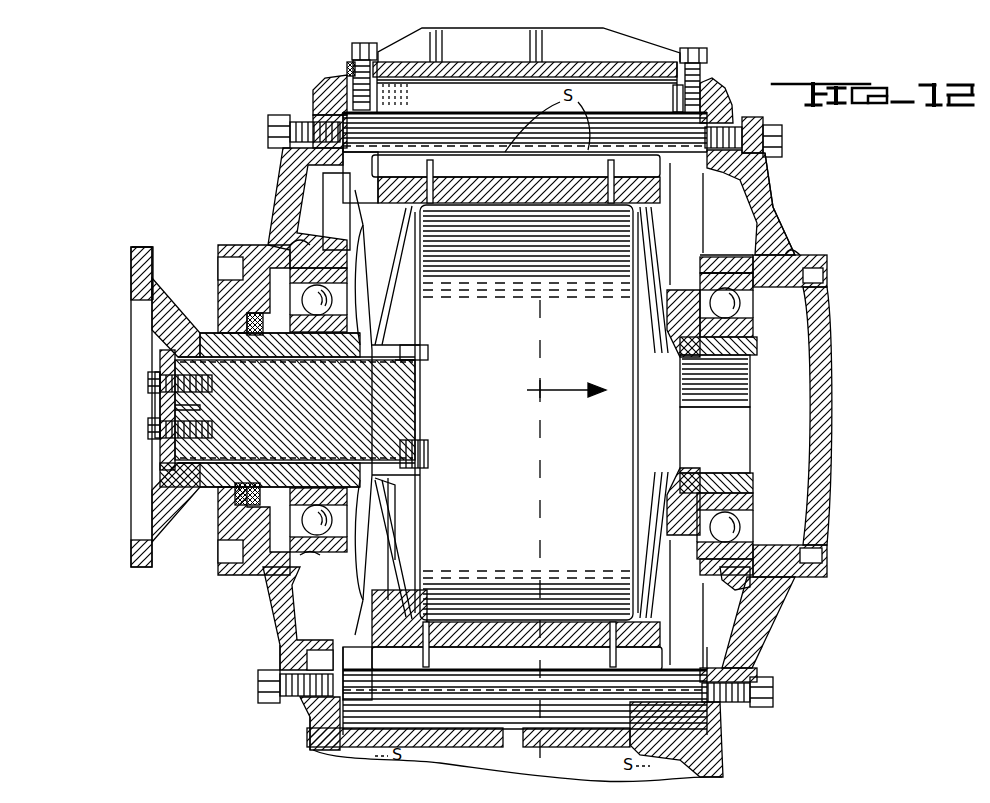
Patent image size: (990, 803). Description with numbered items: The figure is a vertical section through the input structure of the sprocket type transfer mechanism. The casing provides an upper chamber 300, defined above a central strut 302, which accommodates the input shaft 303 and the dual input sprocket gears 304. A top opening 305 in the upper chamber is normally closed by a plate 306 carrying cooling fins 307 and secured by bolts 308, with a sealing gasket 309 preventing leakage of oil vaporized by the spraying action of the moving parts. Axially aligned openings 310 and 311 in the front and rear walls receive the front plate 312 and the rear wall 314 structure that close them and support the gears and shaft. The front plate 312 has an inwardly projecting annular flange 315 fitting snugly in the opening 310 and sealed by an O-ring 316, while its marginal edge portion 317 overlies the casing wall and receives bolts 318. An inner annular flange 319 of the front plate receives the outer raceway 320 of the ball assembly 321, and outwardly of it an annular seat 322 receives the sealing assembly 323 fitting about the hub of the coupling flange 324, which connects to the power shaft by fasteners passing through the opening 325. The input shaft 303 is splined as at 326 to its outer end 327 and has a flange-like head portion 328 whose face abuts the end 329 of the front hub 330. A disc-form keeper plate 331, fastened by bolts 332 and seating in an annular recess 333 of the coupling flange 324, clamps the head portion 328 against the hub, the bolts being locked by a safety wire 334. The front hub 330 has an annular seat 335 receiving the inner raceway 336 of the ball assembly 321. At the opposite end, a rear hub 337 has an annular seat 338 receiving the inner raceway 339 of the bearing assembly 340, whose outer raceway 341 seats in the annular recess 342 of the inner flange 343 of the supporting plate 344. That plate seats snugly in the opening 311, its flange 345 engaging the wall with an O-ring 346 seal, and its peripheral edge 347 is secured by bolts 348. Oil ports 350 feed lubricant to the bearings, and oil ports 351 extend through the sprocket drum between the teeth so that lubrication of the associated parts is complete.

The upper chamber 300 is at (705, 157).
The central strut 302 is at (655, 740).
The input shaft 303 is at (400, 412).
The dual input sprocket gears 304 is at (592, 672).
The top opening 305 is at (512, 102).
The plate 306 is at (665, 62).
The cooling fins 307 is at (410, 45).
The bolts 308 is at (352, 60).
The sealing gasket 309 is at (455, 96).
The opening 310 is at (352, 160).
The opening 311 is at (688, 415).
The front plate 312 is at (285, 200).
The rear wall 314 is at (768, 208).
The annular flange 315 is at (322, 640).
The O-ring 316 is at (325, 660).
The marginal edge portion 317 is at (318, 118).
The bolts 318 is at (268, 132).
The inner annular flange 319 is at (345, 262).
The outer raceway 320 is at (330, 286).
The ball assembly 321 is at (330, 300).
The annular seat 322 is at (225, 290).
The sealing assembly 323 is at (225, 490).
The coupling flange 324 is at (215, 320).
The opening 325 is at (150, 258).
The splines 326 is at (400, 372).
The outer end 327 is at (247, 322).
The head portion 328 is at (428, 454).
The end 329 is at (420, 352).
The front hub 330 is at (398, 485).
The keeper plate 331 is at (163, 450).
The bolts 332 is at (148, 380).
The annular recess 333 is at (160, 520).
The safety wire 334 is at (155, 405).
The annular seat 335 is at (392, 505).
The inner raceway 336 is at (330, 565).
The rear hub 337 is at (735, 352).
The annular seat 338 is at (724, 360).
The inner raceway 339 is at (668, 345).
The bearing assembly 340 is at (740, 325).
The outer raceway 341 is at (692, 290).
The annular recess 342 is at (717, 230).
The inner flange 343 is at (735, 262).
The supporting plate 344 is at (760, 620).
The flange 345 is at (712, 165).
The O-ring 346 is at (760, 170).
The peripheral edge 347 is at (747, 118).
The bolts 348 is at (782, 138).
The oil ports 350 is at (322, 248).
The oil ports 351 is at (605, 630).